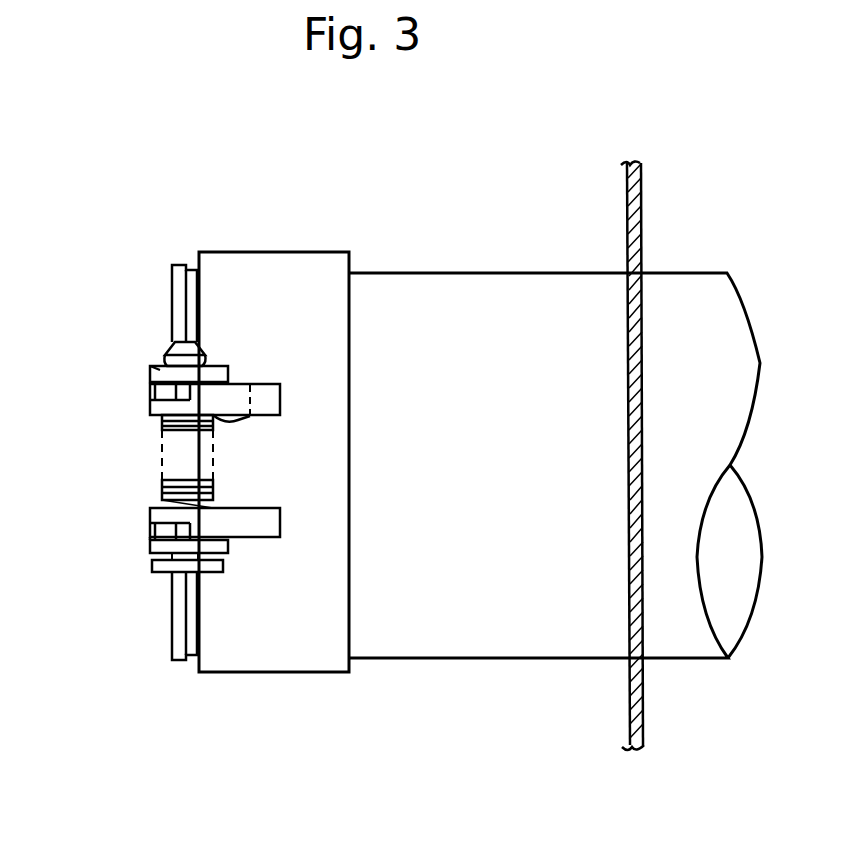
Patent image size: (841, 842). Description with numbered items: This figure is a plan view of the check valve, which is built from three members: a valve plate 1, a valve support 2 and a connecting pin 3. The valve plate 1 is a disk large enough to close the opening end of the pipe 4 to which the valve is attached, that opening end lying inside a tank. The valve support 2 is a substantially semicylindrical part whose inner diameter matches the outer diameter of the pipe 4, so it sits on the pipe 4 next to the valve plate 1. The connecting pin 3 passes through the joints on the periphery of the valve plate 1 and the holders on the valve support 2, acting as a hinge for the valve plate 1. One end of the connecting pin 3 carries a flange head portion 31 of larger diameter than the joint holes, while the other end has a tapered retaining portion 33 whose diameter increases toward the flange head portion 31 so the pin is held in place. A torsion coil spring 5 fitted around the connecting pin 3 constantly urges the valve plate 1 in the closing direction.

The valve plate 1 is at (173, 628).
The valve support 2 is at (252, 262).
The connecting pin 3 is at (119, 280).
The pipe 4 is at (408, 293).
The torsion coil spring 5 is at (165, 485).
The flange head portion 31 is at (150, 570).
The tapered retaining portion 33 is at (165, 352).